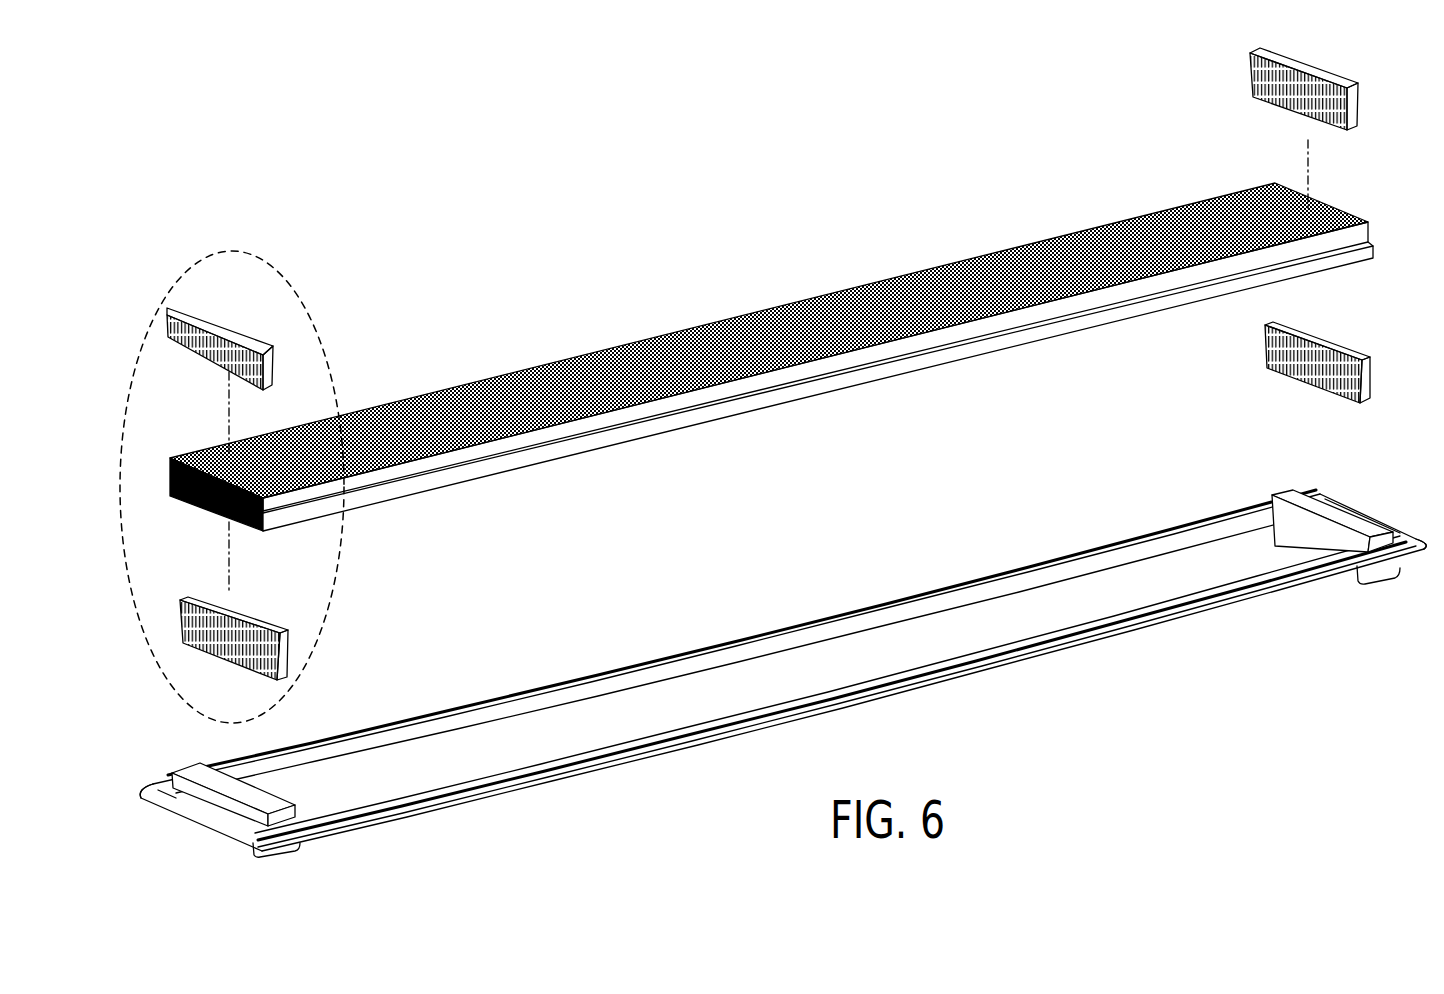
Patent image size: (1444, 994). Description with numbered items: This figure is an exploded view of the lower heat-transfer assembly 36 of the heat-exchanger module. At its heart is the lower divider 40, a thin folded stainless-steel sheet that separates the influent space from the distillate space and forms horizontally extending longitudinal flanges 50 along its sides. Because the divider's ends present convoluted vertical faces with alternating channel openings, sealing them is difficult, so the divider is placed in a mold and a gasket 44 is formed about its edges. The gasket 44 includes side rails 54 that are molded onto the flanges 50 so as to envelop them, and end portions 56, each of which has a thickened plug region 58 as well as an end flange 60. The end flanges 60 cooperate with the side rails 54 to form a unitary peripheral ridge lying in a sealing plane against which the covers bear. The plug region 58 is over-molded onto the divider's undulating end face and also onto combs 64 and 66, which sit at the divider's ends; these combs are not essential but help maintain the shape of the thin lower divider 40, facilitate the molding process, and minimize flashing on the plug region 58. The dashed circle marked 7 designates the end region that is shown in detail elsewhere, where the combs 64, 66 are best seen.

The lower heat-transfer assembly 36 is at (413, 213).
The detail view of divider end 7 is at (301, 302).
The lower divider 40 is at (695, 336).
The longitudinal flanges 50 is at (167, 477).
The comb 64 is at (272, 363).
The comb 66 is at (283, 644).
The gasket 44 is at (554, 646).
The side rails 54 is at (737, 640).
The plug region 58 is at (193, 764).
The end flange 60 is at (157, 787).
The end portions 56 is at (320, 779).